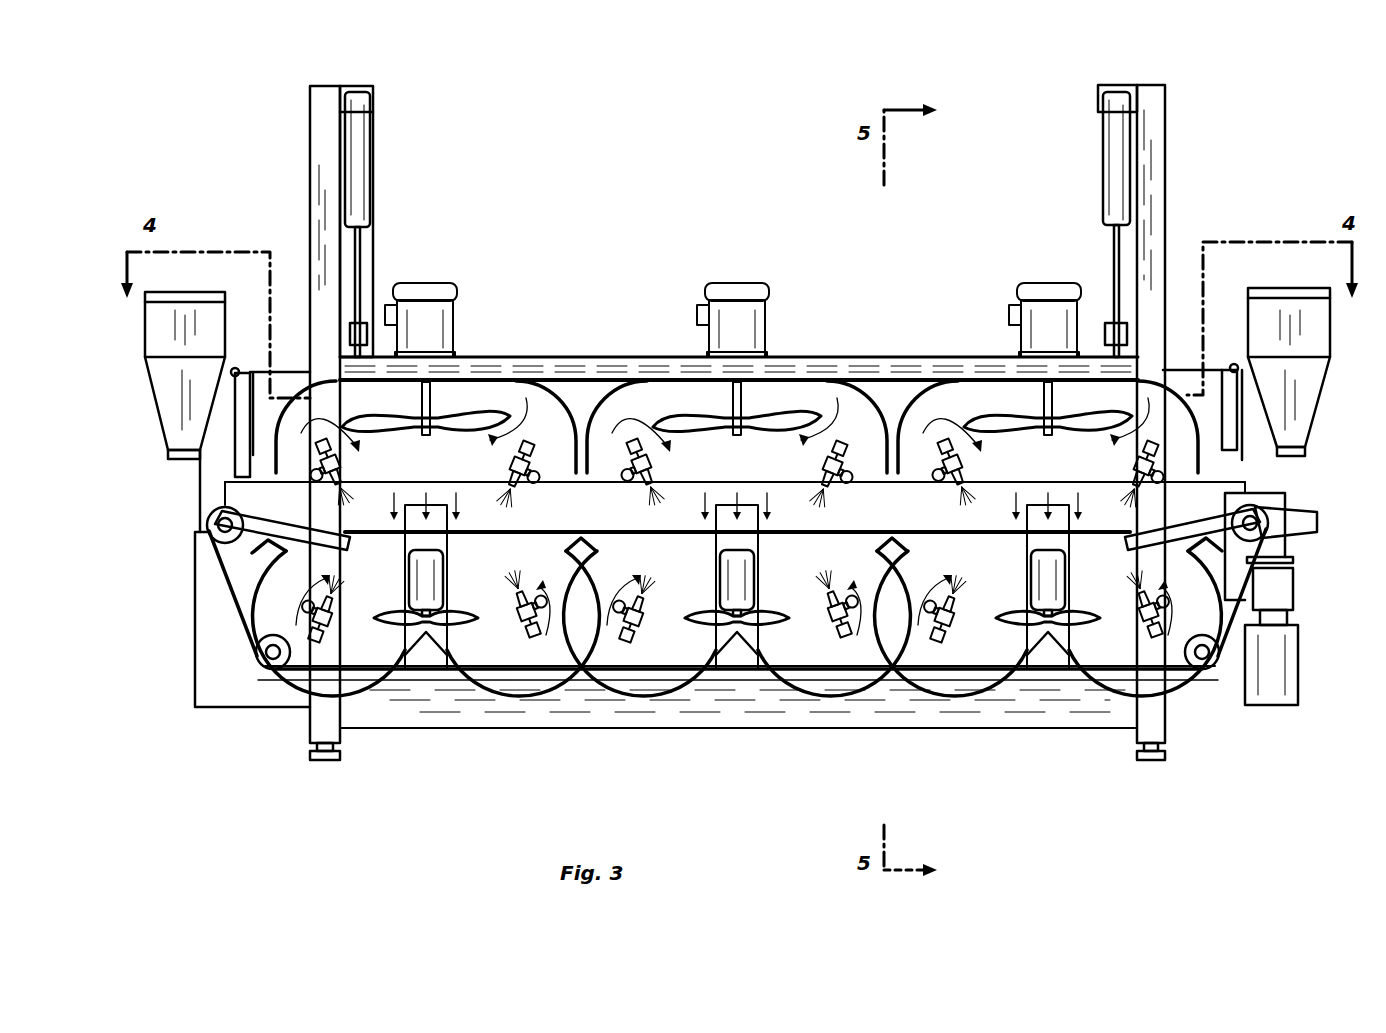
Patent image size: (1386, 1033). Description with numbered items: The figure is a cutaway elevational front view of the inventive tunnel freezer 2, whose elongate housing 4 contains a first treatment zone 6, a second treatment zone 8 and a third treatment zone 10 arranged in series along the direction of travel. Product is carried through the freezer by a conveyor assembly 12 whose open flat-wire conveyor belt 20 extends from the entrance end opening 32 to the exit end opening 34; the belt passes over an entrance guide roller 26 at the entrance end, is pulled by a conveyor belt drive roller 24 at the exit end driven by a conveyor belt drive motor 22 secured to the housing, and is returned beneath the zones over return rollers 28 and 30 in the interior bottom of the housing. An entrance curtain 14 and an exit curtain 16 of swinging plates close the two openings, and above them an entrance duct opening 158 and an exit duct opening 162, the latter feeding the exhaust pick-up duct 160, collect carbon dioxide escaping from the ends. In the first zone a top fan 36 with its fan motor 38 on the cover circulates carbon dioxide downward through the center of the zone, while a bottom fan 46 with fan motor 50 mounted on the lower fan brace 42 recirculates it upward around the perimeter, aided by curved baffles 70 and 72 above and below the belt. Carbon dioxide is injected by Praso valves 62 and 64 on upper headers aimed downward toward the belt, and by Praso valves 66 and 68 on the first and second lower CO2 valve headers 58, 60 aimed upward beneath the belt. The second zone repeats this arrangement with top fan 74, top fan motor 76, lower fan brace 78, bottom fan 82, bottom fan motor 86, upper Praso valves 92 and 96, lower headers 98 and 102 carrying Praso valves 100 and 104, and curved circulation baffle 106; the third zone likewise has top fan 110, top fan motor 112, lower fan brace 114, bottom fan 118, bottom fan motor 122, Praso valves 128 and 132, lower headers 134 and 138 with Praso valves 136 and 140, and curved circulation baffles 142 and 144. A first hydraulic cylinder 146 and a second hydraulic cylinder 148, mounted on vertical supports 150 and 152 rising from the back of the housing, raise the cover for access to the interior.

The tunnel freezer 2 is at (699, 126).
The elongate housing 4 is at (642, 395).
The first treatment zone 6 is at (522, 385).
The second treatment zone 8 is at (797, 385).
The third treatment zone 10 is at (950, 405).
The conveyor assembly 12 is at (224, 578).
The entrance curtain 14 is at (207, 478).
The exit curtain 16 is at (1240, 479).
The conveyor belt 20 is at (652, 530).
The conveyor belt drive motor 22 is at (1282, 656).
The conveyor belt drive roller 24 is at (1268, 536).
The entrance guide roller 26 is at (220, 530).
The return roller 28 is at (268, 662).
The return roller 30 is at (1213, 667).
The entrance end opening 32 is at (210, 505).
The exit end opening 34 is at (1265, 493).
The top fan 36 is at (464, 410).
The fan motor 38 is at (430, 290).
The lower fan brace 42 is at (406, 554).
The bottom fan 46 is at (462, 628).
The fan motor 50 is at (438, 562).
The first lower CO2 valve header 58 is at (334, 646).
The second lower CO2 valve header 60 is at (530, 632).
The Praso valve 62 is at (353, 458).
The Praso valve 64 is at (512, 448).
The Praso valve 66 is at (372, 686).
The Praso valve 68 is at (561, 671).
The curved baffle 70 is at (562, 400).
The curved baffle 72 is at (272, 606).
The top fan 74 is at (670, 428).
The top fan motor 76 is at (741, 290).
The lower fan brace 78 is at (717, 554).
The bottom fan 82 is at (722, 628).
The bottom fan motor 86 is at (748, 562).
The Praso valve 92 is at (660, 458).
The Praso valve 96 is at (824, 455).
The first lower carbon dioxide valve header 98 is at (643, 640).
The Praso valve 100 is at (686, 692).
The second lower CO2 valve header 102 is at (838, 635).
The Praso valve 104 is at (859, 664).
The curved circulation baffle 106 is at (860, 377).
The top fan 110 is at (977, 430).
The top fan motor 112 is at (1051, 290).
The lower fan brace 114 is at (1028, 556).
The bottom fan 118 is at (1008, 628).
The bottom fan motor 122 is at (1062, 566).
The Praso valve 128 is at (970, 462).
The Praso valve 132 is at (1136, 456).
The first lower carbon dioxide valve header 134 is at (950, 636).
The Praso valve 136 is at (892, 689).
The second lower CO2 valve header 138 is at (1142, 636).
The Praso valve 140 is at (1081, 686).
The curved circulation baffle 142 is at (927, 395).
The curved circulation baffle 144 is at (924, 572).
The first hydraulic cylinder 146 is at (360, 147).
The second hydraulic cylinder 148 is at (1106, 150).
The vertical support 150 is at (318, 120).
The vertical support 152 is at (1160, 128).
The entrance duct opening 158 is at (180, 455).
The exhaust pick-up duct 160 is at (1283, 300).
The exit duct opening 162 is at (1292, 455).